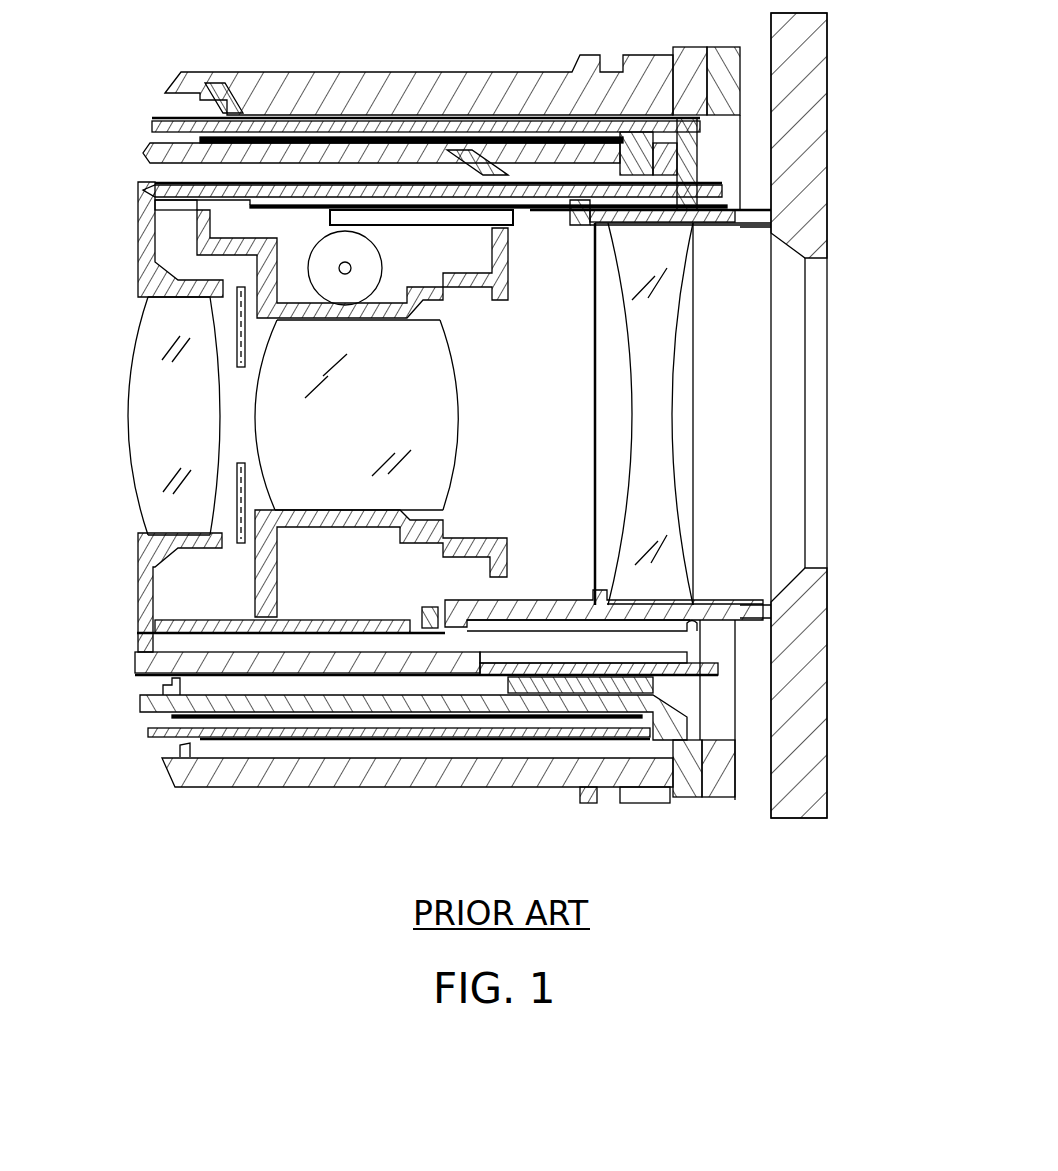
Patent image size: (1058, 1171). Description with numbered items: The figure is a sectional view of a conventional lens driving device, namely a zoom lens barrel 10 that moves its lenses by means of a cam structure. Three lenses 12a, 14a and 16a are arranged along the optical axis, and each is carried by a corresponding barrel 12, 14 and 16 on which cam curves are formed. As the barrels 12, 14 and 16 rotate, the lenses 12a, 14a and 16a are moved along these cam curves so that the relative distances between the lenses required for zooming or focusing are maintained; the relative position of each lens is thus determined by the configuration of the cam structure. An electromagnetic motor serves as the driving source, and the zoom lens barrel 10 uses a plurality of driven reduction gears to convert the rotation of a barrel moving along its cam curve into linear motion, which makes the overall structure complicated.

The zoom lens barrel 10 is at (846, 90).
The barrel 12 is at (140, 594).
The lens 12a is at (165, 478).
The barrel 14 is at (330, 522).
The lens 14a is at (285, 395).
The barrel 16 is at (655, 227).
The lens 16a is at (658, 492).